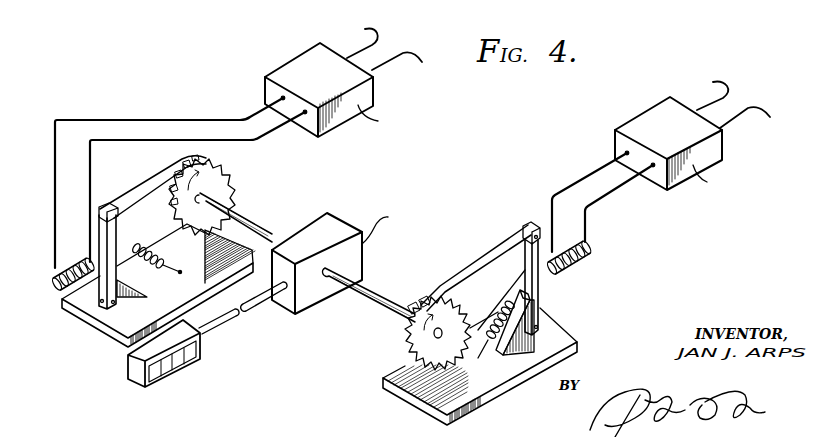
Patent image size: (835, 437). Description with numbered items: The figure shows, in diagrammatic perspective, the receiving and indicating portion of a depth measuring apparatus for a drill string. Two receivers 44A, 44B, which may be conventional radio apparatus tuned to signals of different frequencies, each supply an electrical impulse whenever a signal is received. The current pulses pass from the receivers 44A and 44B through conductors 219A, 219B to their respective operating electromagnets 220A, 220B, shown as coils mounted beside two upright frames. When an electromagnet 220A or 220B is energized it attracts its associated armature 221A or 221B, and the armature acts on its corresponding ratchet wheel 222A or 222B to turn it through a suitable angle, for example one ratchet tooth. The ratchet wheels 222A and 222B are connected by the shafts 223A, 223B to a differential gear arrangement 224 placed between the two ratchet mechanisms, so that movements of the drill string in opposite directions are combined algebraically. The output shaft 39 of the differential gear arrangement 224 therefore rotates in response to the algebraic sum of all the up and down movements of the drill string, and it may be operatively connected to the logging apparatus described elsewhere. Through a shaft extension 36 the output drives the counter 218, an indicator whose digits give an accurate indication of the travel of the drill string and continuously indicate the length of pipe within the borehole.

The receiver 44A is at (660, 112).
The receiver 44B is at (308, 55).
The conductor 219A is at (603, 188).
The conductor 219B is at (251, 134).
The operating electromagnet 220A is at (592, 248).
The operating electromagnet 220B is at (53, 293).
The armature 221A is at (543, 293).
The armature 221B is at (107, 306).
The ratchet wheel 222A is at (418, 349).
The ratchet wheel 222B is at (229, 182).
The shaft 223A is at (387, 297).
The shaft 223B is at (253, 223).
The differential gear arrangement 224 is at (335, 217).
The output shaft 39 is at (259, 311).
The shaft extension 36 is at (220, 330).
The counter 218 is at (160, 378).